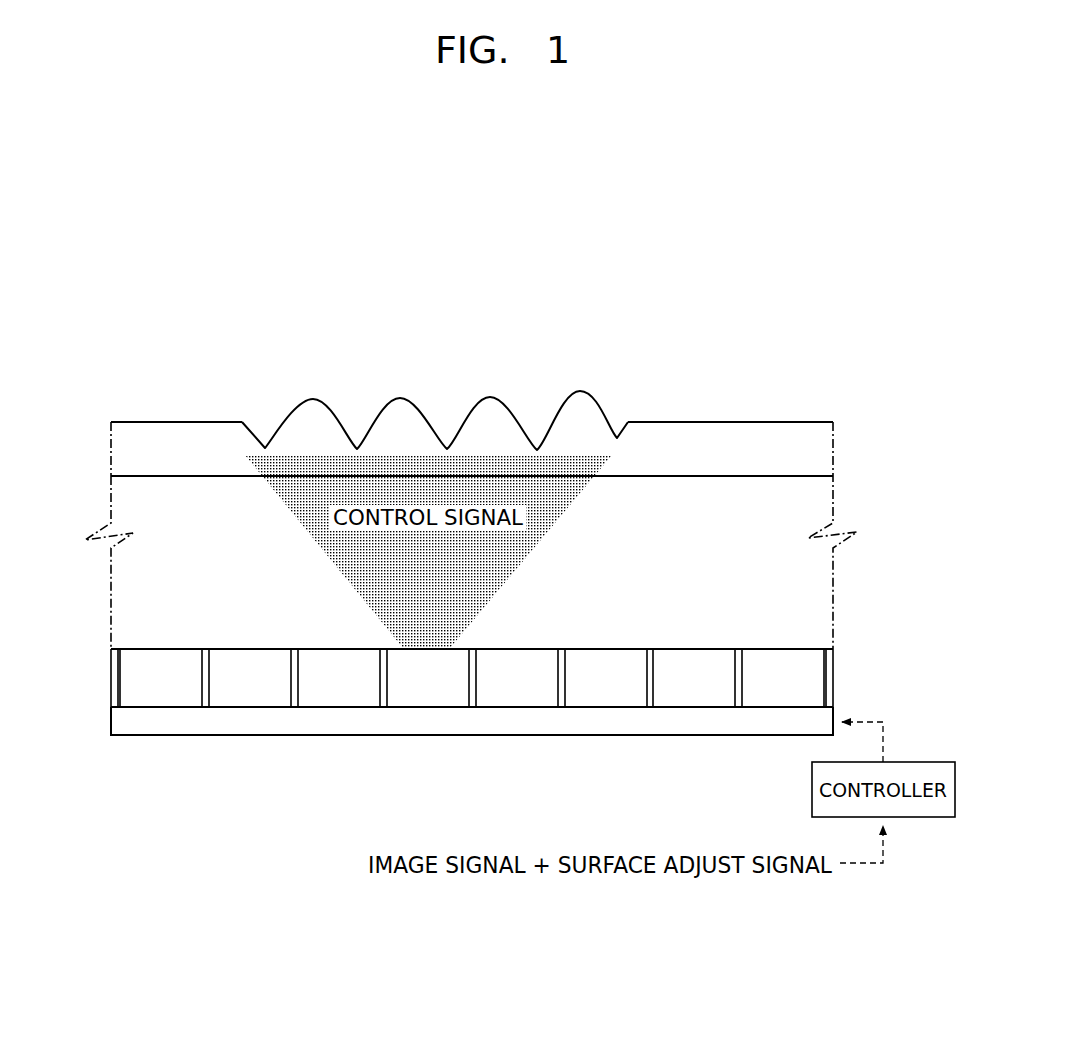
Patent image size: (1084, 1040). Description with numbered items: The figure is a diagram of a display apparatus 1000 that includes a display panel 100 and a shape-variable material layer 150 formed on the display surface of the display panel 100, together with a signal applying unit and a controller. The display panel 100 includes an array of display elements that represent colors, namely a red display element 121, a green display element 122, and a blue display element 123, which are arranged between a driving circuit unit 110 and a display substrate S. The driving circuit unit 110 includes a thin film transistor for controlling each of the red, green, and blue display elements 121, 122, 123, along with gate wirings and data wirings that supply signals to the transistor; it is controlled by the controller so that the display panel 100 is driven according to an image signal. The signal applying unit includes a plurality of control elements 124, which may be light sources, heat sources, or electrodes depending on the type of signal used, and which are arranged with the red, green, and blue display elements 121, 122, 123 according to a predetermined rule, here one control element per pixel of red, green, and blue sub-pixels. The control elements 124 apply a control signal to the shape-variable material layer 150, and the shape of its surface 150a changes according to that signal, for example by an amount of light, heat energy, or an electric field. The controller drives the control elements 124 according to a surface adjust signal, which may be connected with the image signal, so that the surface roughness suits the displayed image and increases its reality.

The display apparatus 1000 is at (862, 390).
The display panel 100 is at (857, 480).
The driving circuit unit 110 is at (525, 720).
The red display element 121 is at (161, 697).
The green display element 122 is at (249, 697).
The blue display element 123 is at (338, 697).
The control element 124 is at (428, 697).
The shape-variable material layer 150 is at (128, 452).
The surface of the shape-variable material layer 150a is at (776, 421).
The display substrate S is at (130, 611).